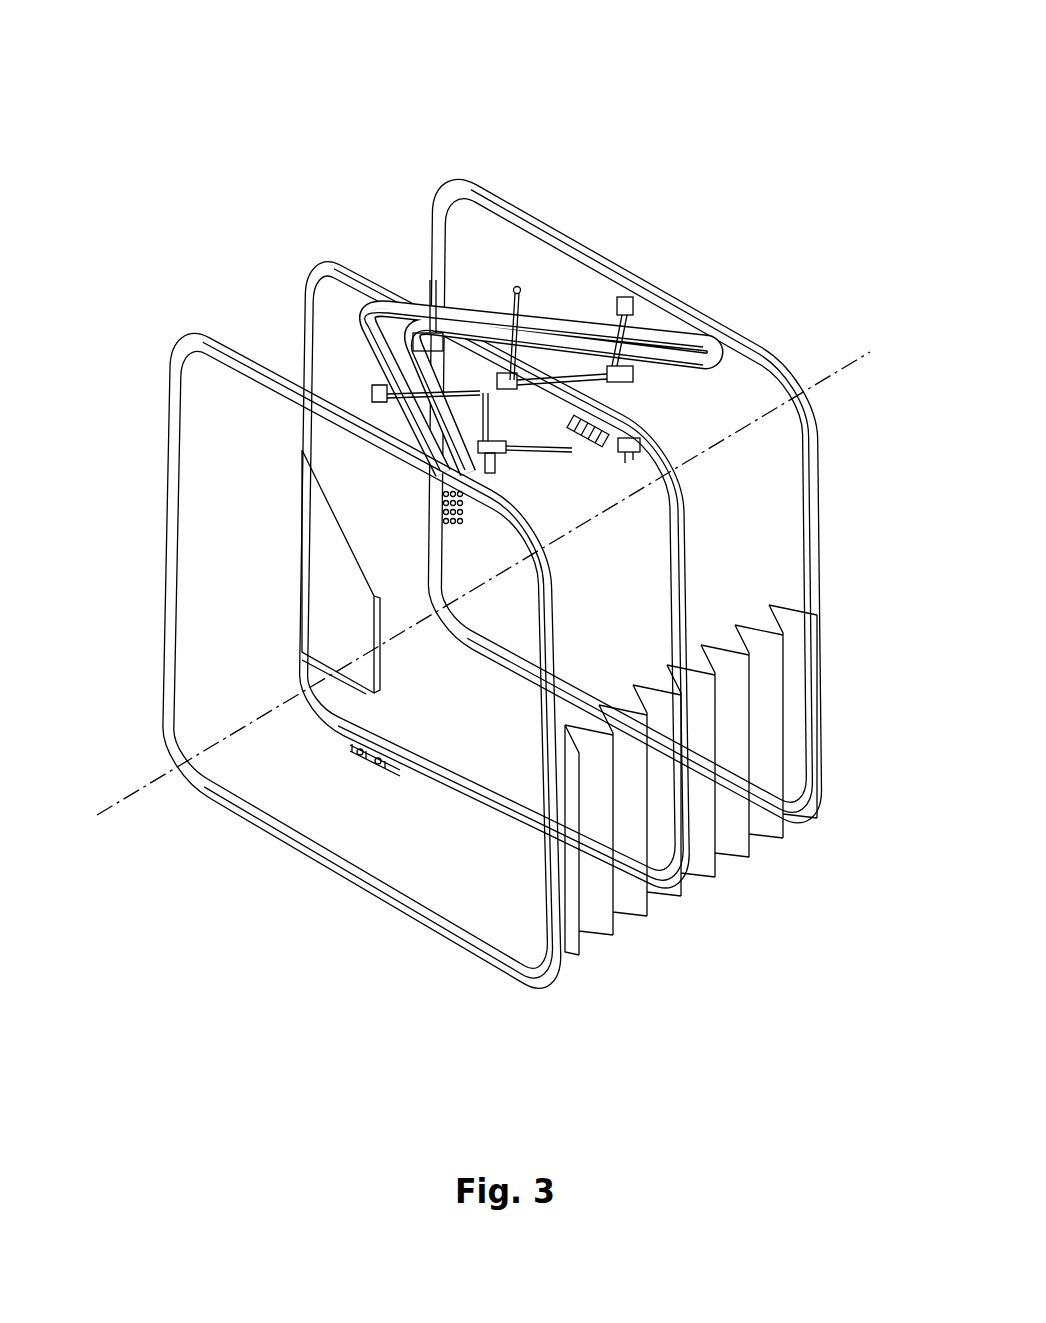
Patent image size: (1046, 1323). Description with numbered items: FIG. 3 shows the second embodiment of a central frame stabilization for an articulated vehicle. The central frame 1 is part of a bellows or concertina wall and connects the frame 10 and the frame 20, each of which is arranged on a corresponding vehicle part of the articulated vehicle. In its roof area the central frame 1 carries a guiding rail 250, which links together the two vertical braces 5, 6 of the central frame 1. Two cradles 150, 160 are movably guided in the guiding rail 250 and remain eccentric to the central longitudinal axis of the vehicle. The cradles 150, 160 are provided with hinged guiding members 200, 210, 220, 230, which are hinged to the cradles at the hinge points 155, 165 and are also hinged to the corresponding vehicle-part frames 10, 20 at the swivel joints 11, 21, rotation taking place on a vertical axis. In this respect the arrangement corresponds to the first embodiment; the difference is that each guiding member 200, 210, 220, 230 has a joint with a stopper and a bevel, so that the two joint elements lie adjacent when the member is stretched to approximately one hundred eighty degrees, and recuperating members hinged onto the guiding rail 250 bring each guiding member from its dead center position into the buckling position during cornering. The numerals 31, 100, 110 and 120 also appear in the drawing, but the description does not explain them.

The central frame 1 is at (307, 265).
The vertical brace 5 is at (556, 487).
The vertical brace 6 is at (299, 557).
The frame 10 is at (310, 860).
The swivel joint 11 is at (630, 292).
The frame 20 is at (768, 355).
The swivel joint 21 is at (376, 463).
The link rod 31 is at (642, 422).
The handle tube 100 is at (491, 302).
The pleated panel 110 is at (673, 838).
The pivot axis 120 is at (157, 778).
The cradle 150 is at (505, 462).
The hinge point 155 is at (592, 510).
The cradle 160 is at (380, 313).
The hinge point 165 is at (330, 305).
The guiding member 200 is at (614, 308).
The guiding member 210 is at (636, 318).
The guiding member 220 is at (225, 345).
The guiding member 230 is at (607, 500).
The guiding rail 250 is at (637, 458).